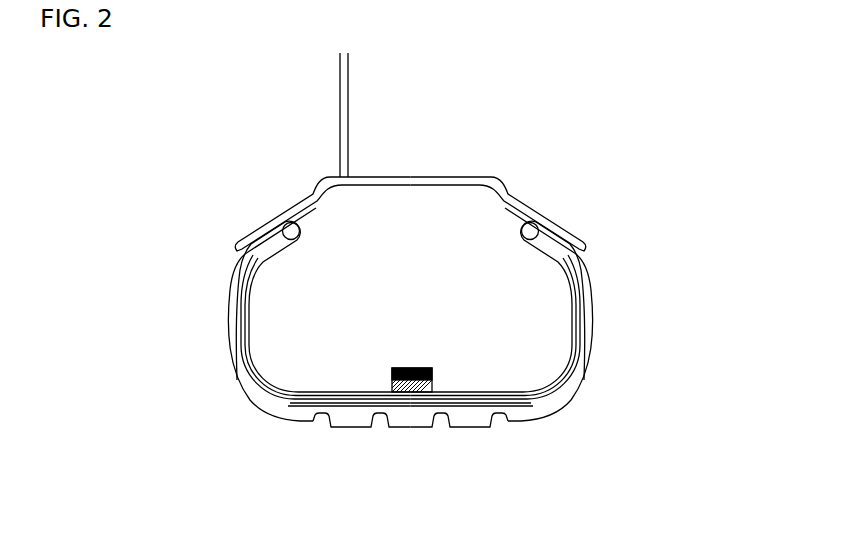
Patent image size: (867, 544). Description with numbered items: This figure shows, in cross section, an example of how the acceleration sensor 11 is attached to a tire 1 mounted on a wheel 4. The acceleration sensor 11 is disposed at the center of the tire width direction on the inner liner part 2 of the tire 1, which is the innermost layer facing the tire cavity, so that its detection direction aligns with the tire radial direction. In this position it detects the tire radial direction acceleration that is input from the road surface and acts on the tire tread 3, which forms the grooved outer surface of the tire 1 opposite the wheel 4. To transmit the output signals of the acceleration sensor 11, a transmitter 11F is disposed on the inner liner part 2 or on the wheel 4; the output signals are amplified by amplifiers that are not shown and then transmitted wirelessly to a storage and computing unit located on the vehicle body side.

The tire 1 is at (595, 285).
The inner liner part 2 is at (367, 392).
The tire tread 3 is at (360, 418).
The wheel 4 is at (308, 193).
The acceleration sensor 11 is at (433, 379).
The transmitter 11F is at (424, 368).